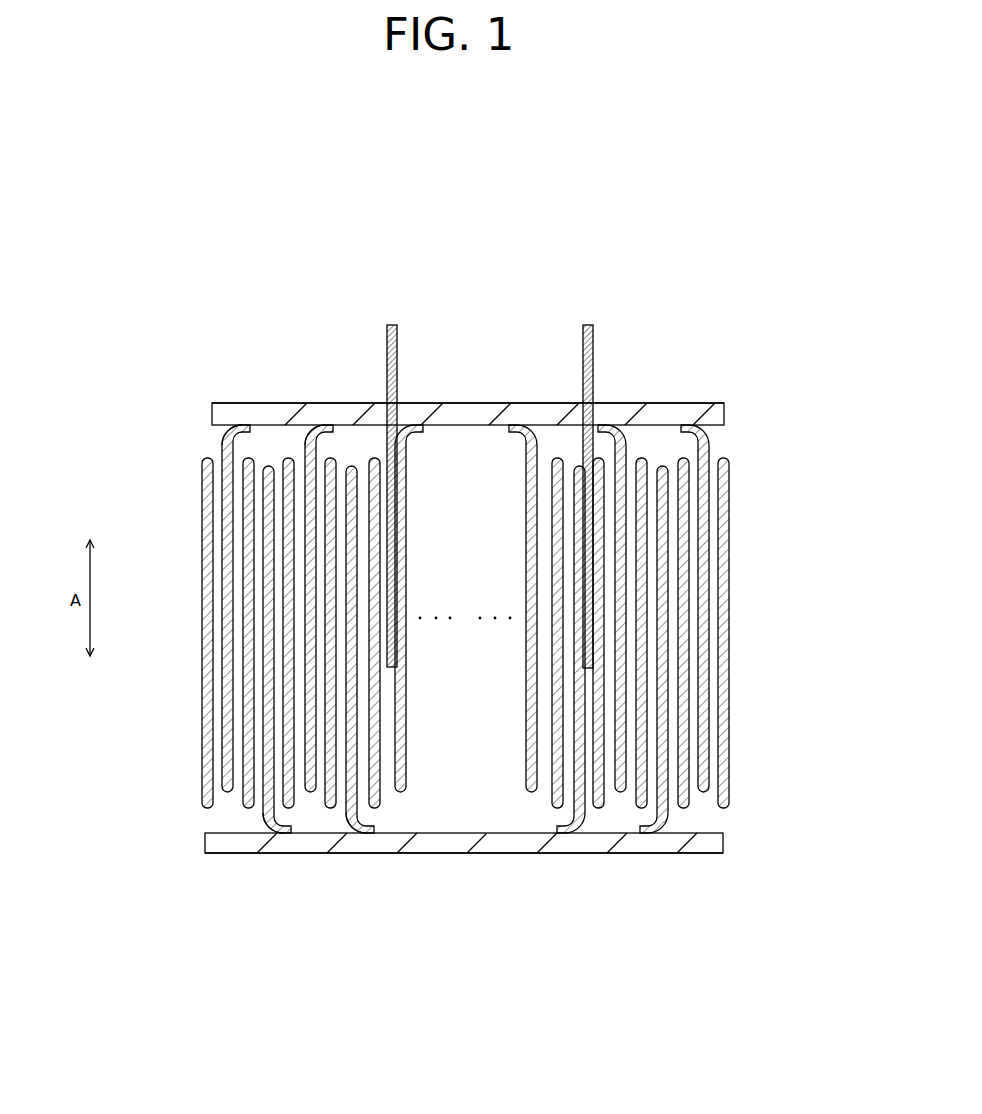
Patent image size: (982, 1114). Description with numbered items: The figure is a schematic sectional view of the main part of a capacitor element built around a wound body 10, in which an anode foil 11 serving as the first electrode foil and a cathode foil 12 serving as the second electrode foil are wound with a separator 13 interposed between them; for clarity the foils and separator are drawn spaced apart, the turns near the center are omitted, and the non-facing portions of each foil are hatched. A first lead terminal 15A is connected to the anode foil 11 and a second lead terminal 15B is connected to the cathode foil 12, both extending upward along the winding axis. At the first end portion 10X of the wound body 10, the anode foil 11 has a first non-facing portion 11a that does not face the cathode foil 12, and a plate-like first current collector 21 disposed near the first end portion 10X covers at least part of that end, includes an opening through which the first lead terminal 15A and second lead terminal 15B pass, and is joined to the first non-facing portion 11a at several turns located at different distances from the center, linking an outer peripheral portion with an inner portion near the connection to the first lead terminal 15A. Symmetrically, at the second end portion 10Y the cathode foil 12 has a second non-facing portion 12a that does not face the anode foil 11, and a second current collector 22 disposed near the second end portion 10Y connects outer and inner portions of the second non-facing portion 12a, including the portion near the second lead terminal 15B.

The wound body 10 is at (438, 632).
The anode foil 11 is at (307, 607).
The first non-facing portion 11a is at (293, 438).
The cathode foil 12 is at (350, 693).
The second non-facing portion 12a is at (338, 838).
The separator 13 is at (240, 510).
The first lead terminal 15A is at (387, 350).
The second lead terminal 15B is at (583, 350).
The first current collector 21 is at (681, 412).
The second current collector 22 is at (493, 843).
The first end portion 10X is at (746, 400).
The second end portion 10Y is at (730, 832).